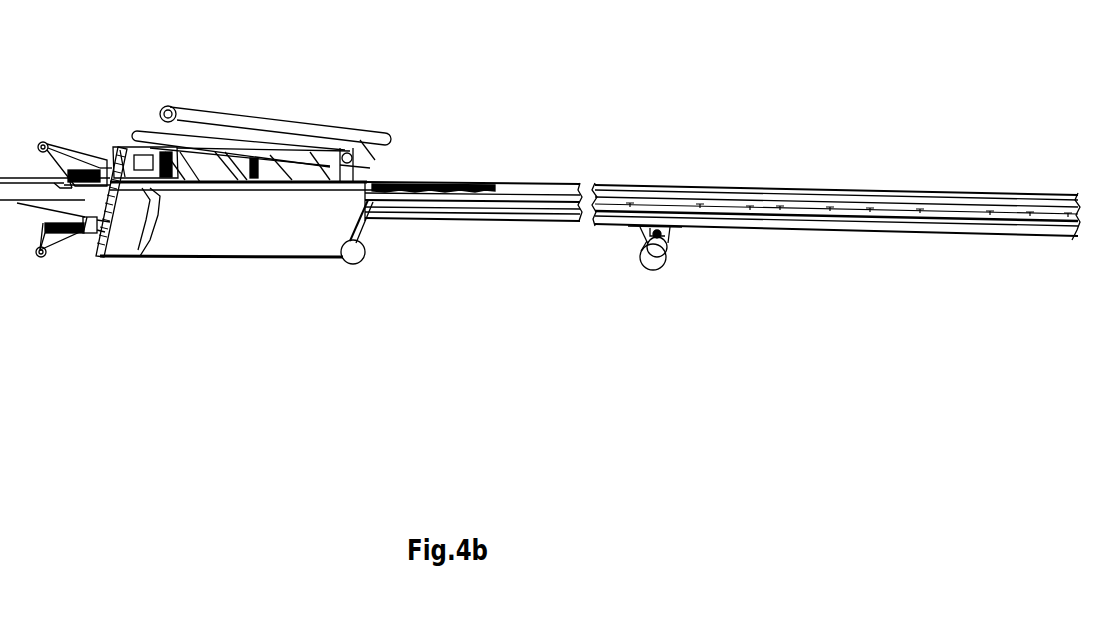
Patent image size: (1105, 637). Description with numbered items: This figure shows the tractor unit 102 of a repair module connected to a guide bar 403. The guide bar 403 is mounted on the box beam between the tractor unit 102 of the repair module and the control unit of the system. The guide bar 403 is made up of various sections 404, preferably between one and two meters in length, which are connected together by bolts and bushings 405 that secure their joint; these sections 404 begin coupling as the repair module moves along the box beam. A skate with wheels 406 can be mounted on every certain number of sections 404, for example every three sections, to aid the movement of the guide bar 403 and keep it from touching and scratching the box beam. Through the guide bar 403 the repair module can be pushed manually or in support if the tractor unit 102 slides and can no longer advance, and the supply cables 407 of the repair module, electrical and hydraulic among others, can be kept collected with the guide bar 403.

The tractor unit 102 is at (212, 270).
The guide bar 403 is at (733, 167).
The sections 404 is at (455, 222).
The bolts and bushings 405 is at (672, 234).
The skate with wheels 406 is at (655, 272).
The supply cables 407 is at (463, 182).